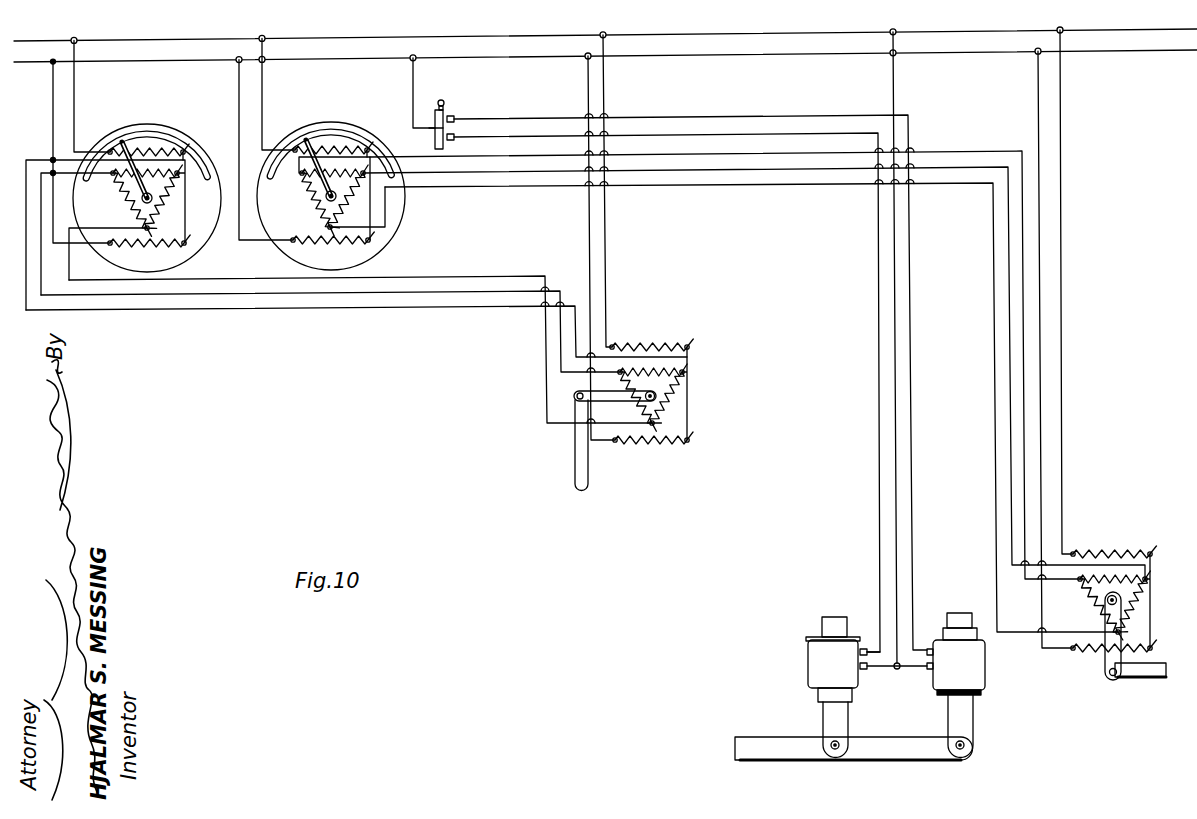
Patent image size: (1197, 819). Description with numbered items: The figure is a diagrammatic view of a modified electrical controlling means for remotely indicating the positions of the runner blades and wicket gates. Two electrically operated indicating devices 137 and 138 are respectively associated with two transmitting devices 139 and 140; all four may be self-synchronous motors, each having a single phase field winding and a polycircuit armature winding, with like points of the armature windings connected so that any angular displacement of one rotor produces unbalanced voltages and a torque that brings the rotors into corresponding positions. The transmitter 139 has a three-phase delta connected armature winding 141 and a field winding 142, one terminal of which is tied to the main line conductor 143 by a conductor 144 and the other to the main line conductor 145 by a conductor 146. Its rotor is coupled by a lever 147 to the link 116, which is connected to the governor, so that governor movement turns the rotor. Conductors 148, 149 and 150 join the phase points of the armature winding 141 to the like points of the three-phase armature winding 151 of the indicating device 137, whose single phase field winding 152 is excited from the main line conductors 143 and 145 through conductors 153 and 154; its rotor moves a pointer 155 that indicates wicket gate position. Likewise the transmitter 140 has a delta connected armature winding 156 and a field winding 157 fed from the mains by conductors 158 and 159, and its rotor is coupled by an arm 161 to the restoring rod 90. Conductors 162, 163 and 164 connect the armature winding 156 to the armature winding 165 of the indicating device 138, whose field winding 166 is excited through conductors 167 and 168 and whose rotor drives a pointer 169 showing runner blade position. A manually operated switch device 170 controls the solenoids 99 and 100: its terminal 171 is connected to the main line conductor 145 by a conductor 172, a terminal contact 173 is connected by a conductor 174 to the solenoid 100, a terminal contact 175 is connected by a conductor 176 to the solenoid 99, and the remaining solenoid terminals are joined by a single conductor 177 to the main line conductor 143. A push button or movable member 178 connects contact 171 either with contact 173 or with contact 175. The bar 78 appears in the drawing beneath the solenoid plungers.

The bar 78 is at (800, 736).
The restoring rod 90 is at (578, 466).
The solenoid 99 is at (843, 687).
The solenoid 100 is at (956, 685).
The link 116 is at (1153, 678).
The electrical indicating device 137 is at (331, 214).
The electrical indicating device 138 is at (133, 203).
The transmitter 139 is at (1107, 615).
The transmitter 140 is at (651, 376).
The armature winding 141 is at (1090, 606).
The field winding 142 is at (1113, 528).
The main line conductor 143 is at (746, 33).
The conductor 144 is at (1062, 386).
The main line conductor 145 is at (720, 56).
The conductor 146 is at (1040, 318).
The lever 147 is at (1105, 648).
The conductor 148 is at (1009, 263).
The conductor 149 is at (1023, 298).
The conductor 150 is at (995, 232).
The armature winding 151 is at (313, 207).
The field winding 152 is at (322, 243).
The conductor 153 is at (282, 95).
The conductor 154 is at (239, 240).
The pointer 155 is at (310, 143).
The armature winding 156 is at (675, 404).
The field winding 157 is at (652, 442).
The conductor 158 is at (630, 258).
The conductor 159 is at (588, 215).
The arm 161 is at (612, 398).
The conductor 162 is at (418, 306).
The conductor 163 is at (452, 294).
The conductor 164 is at (472, 277).
The armature winding 165 is at (127, 200).
The field winding 166 is at (155, 148).
The conductor 167 is at (85, 78).
The conductor 168 is at (53, 90).
The pointer 169 is at (125, 146).
The switch device 170 is at (455, 83).
The terminal 171 is at (431, 129).
The conductor 172 is at (411, 78).
The terminal contact 173 is at (455, 116).
The conductor 174 is at (516, 119).
The terminal contact 175 is at (456, 139).
The conductor 176 is at (722, 152).
The conductor 177 is at (878, 462).
The push button 178 is at (449, 128).